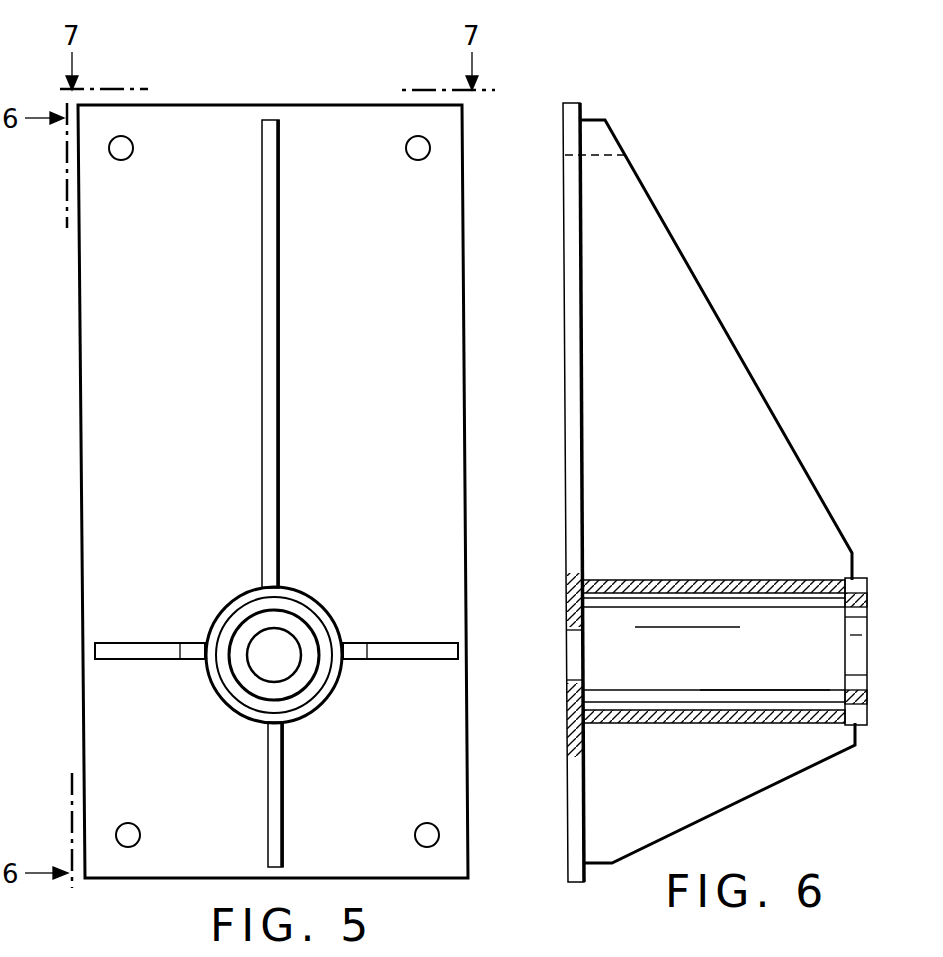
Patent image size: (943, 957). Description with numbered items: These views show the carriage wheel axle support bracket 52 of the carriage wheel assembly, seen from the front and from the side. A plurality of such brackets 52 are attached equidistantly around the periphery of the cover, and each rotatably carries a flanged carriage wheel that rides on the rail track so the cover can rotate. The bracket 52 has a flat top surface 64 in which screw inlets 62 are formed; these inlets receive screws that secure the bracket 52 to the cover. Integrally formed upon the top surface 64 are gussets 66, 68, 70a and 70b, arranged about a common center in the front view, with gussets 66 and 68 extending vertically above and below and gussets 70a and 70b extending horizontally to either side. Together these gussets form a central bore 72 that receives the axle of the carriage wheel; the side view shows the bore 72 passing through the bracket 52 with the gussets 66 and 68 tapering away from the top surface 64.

In FIG. 5, the carriage wheel axle support bracket 52 is at (239, 96).
In FIG. 6, the carriage wheel axle support bracket 52 is at (676, 222).
In FIG. 5, the screw inlets 62 is at (121, 161).
In FIG. 6, the screw inlets 62 is at (627, 155).
In FIG. 5, the top surface 64 is at (181, 343).
In FIG. 6, the top surface 64 is at (573, 309).
In FIG. 5, the gusset 66 is at (274, 369).
In FIG. 6, the gusset 66 is at (728, 497).
In FIG. 5, the gusset 68 is at (278, 803).
In FIG. 6, the gusset 68 is at (700, 800).
In FIG. 5, the gusset 70a is at (147, 654).
In FIG. 5, the gusset 70b is at (432, 653).
In FIG. 5, the bore 72 is at (285, 643).
In FIG. 6, the bore 72 is at (715, 620).